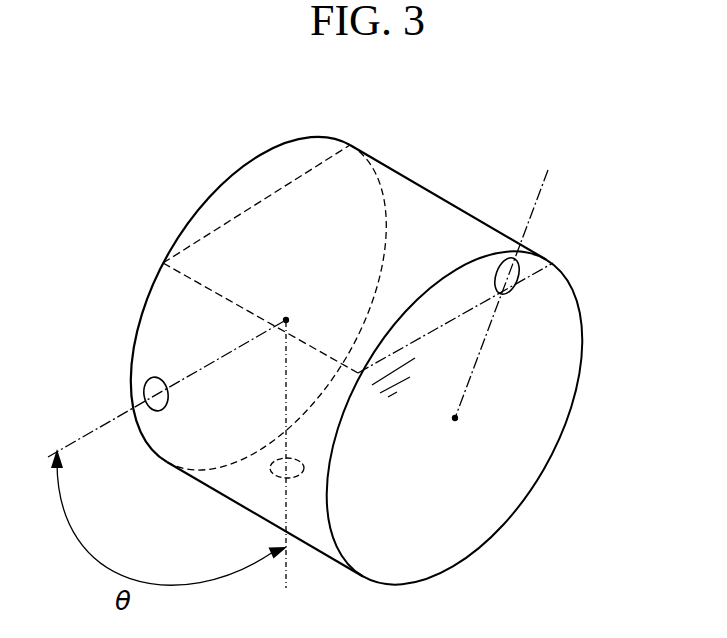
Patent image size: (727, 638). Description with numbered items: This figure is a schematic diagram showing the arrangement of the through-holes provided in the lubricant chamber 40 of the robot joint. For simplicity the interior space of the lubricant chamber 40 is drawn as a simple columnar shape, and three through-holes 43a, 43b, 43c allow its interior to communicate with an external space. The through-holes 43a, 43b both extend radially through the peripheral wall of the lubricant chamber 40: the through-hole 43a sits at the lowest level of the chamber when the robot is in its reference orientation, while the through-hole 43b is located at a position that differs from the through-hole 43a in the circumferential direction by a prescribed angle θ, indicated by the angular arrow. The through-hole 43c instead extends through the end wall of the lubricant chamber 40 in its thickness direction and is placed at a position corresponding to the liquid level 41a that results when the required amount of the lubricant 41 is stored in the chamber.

The lubricant chamber 40 is at (215, 187).
The lubricant 41 is at (167, 291).
The liquid level 41a is at (240, 308).
The through-hole 43a is at (270, 473).
The through-hole 43b is at (149, 377).
The through-hole 43c is at (527, 272).